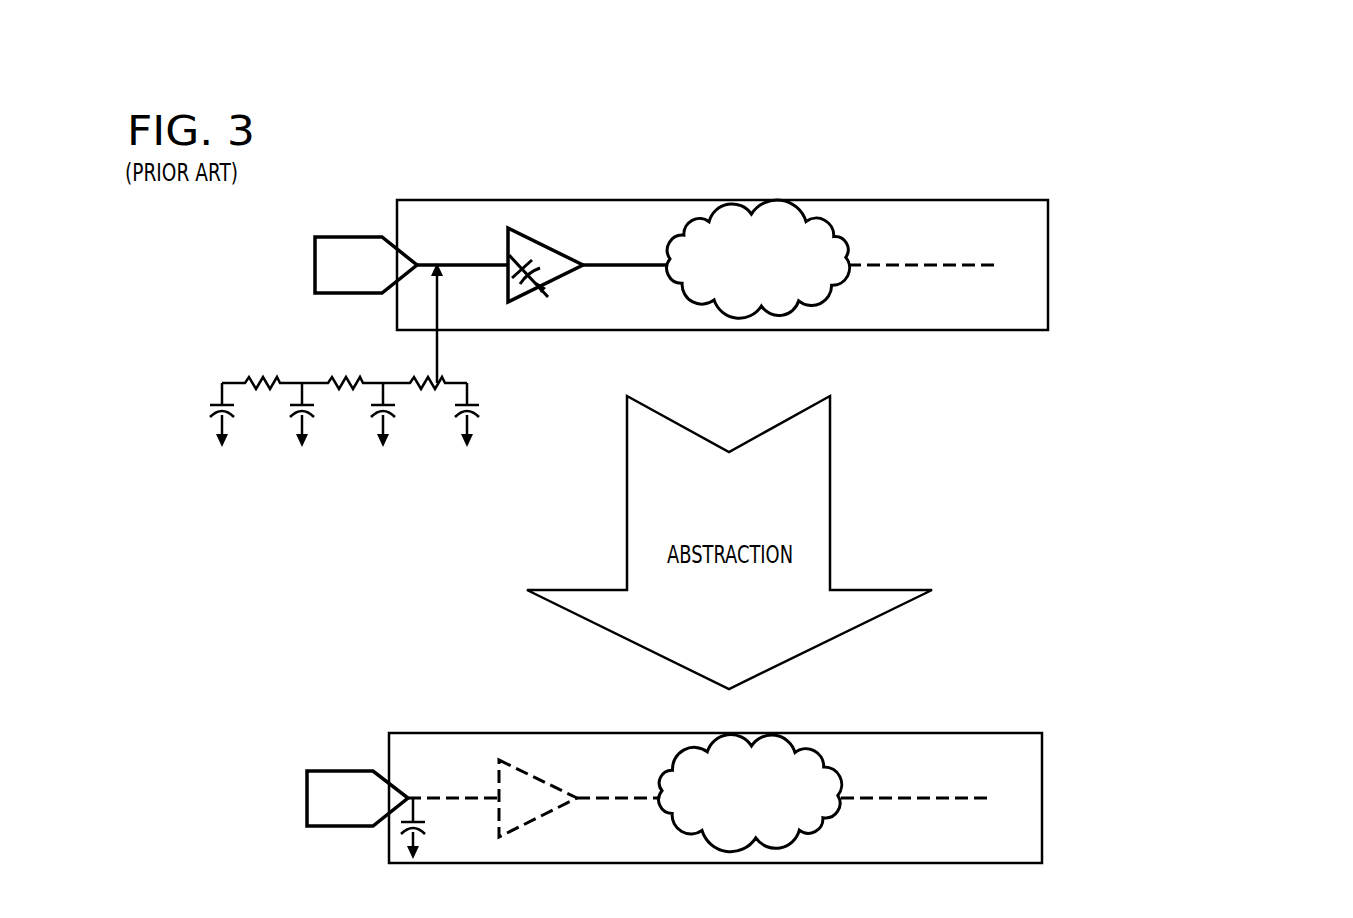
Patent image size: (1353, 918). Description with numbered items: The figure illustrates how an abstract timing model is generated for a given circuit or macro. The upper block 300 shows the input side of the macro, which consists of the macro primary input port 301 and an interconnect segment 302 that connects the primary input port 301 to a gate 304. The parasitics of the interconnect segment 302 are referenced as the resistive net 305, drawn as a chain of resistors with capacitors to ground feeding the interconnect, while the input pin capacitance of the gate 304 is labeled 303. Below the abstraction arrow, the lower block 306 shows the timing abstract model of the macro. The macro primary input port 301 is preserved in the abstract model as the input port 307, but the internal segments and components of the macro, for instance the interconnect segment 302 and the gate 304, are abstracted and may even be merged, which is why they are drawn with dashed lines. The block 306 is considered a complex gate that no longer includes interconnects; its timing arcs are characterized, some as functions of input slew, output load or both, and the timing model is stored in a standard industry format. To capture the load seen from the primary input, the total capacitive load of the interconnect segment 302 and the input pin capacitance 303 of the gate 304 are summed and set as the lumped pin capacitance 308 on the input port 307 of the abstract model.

The block showing input side of the macro 300 is at (946, 170).
The macro primary input port 301 is at (343, 237).
The interconnect segment 302 is at (453, 263).
The input pin capacitance of the gate 303 is at (522, 243).
The gate 304 is at (560, 250).
The parasitics of the interconnect segment 305 is at (222, 383).
The timing abstract model of the macro 306 is at (958, 727).
The input port of the abstract model 307 is at (336, 771).
The lumped pin capacitance 308 is at (450, 797).